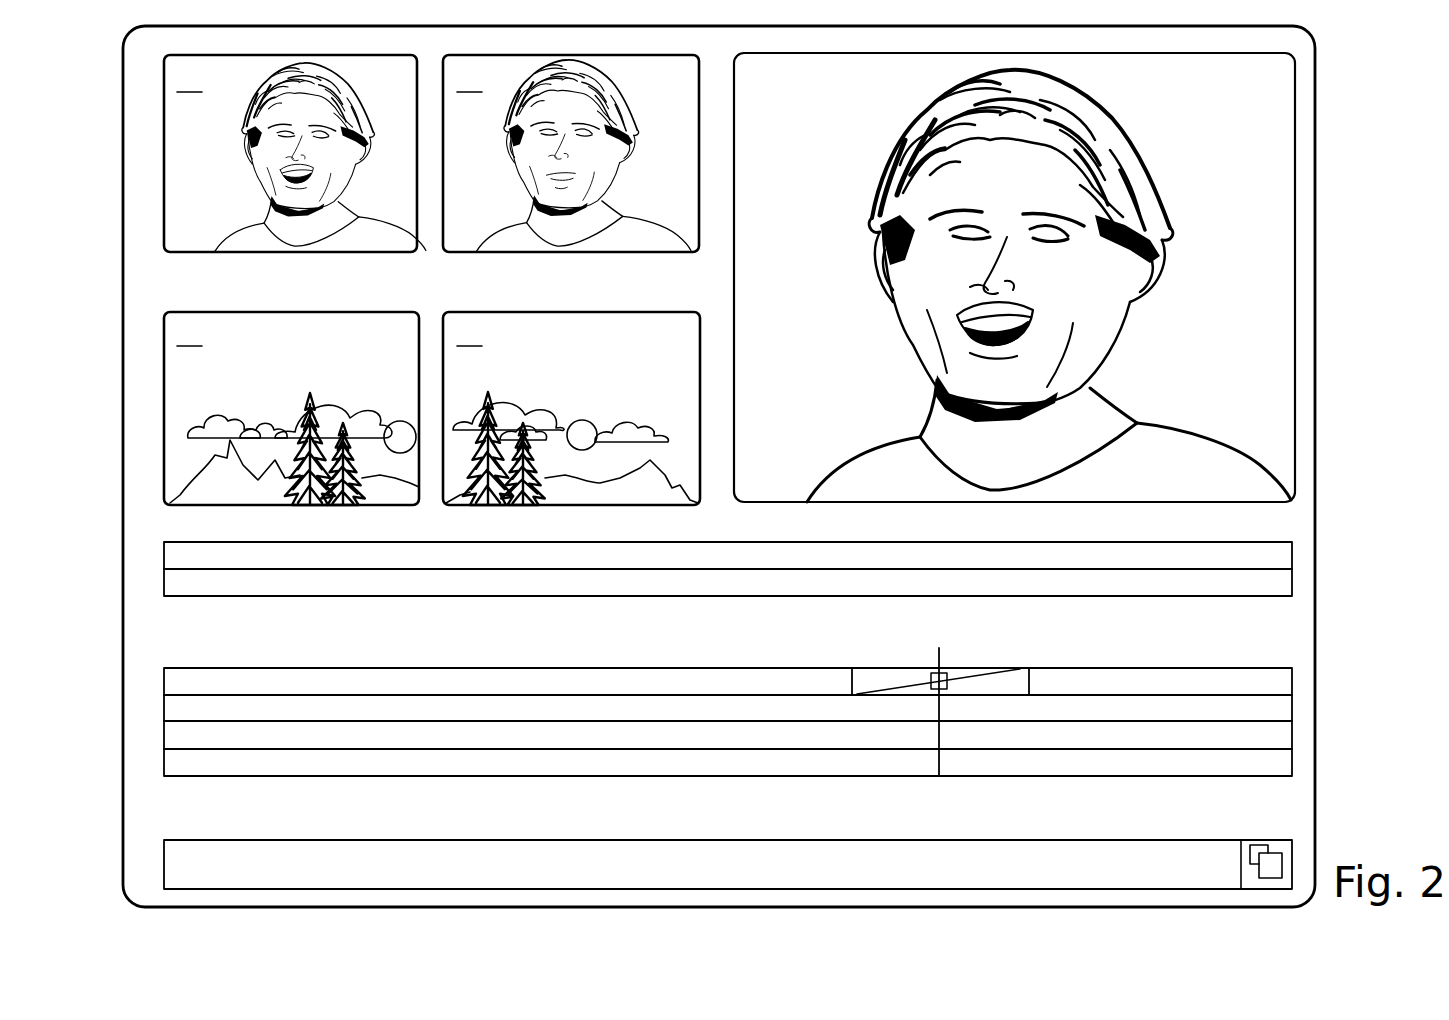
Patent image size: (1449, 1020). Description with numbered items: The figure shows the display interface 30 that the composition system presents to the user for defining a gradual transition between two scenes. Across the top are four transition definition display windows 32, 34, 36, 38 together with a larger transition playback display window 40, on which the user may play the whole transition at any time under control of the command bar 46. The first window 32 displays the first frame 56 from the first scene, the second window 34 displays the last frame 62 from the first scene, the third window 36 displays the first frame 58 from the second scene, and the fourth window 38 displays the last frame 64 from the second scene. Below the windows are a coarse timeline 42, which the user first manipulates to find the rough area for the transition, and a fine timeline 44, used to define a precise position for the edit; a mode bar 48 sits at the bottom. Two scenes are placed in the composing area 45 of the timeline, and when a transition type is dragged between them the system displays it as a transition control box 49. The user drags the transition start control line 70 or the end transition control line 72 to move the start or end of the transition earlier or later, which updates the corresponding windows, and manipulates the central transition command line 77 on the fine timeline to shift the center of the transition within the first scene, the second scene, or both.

The display interface 30 is at (1330, 80).
The first transition definition display window 32 is at (295, 175).
The second transition definition display window 34 is at (571, 175).
The third transition definition display window 36 is at (291, 388).
The fourth transition definition display window 38 is at (571, 387).
The transition playback display window 40 is at (734, 233).
The coarse timeline 42 is at (1293, 587).
The fine timeline 44 is at (782, 691).
The composing area (composition track) 45 is at (1293, 681).
The command bar 46 is at (725, 568).
The mode bar 48 is at (164, 873).
The transition control box 49 is at (961, 653).
The first frame from the first scene 56 is at (191, 79).
The first frame from the second scene 58 is at (191, 333).
The last frame from the first scene 62 is at (471, 79).
The last frame from the second scene 64 is at (471, 333).
The transition start control line 70 is at (852, 682).
The end transition control line 72 is at (1030, 683).
The central transition command line 77 is at (938, 657).